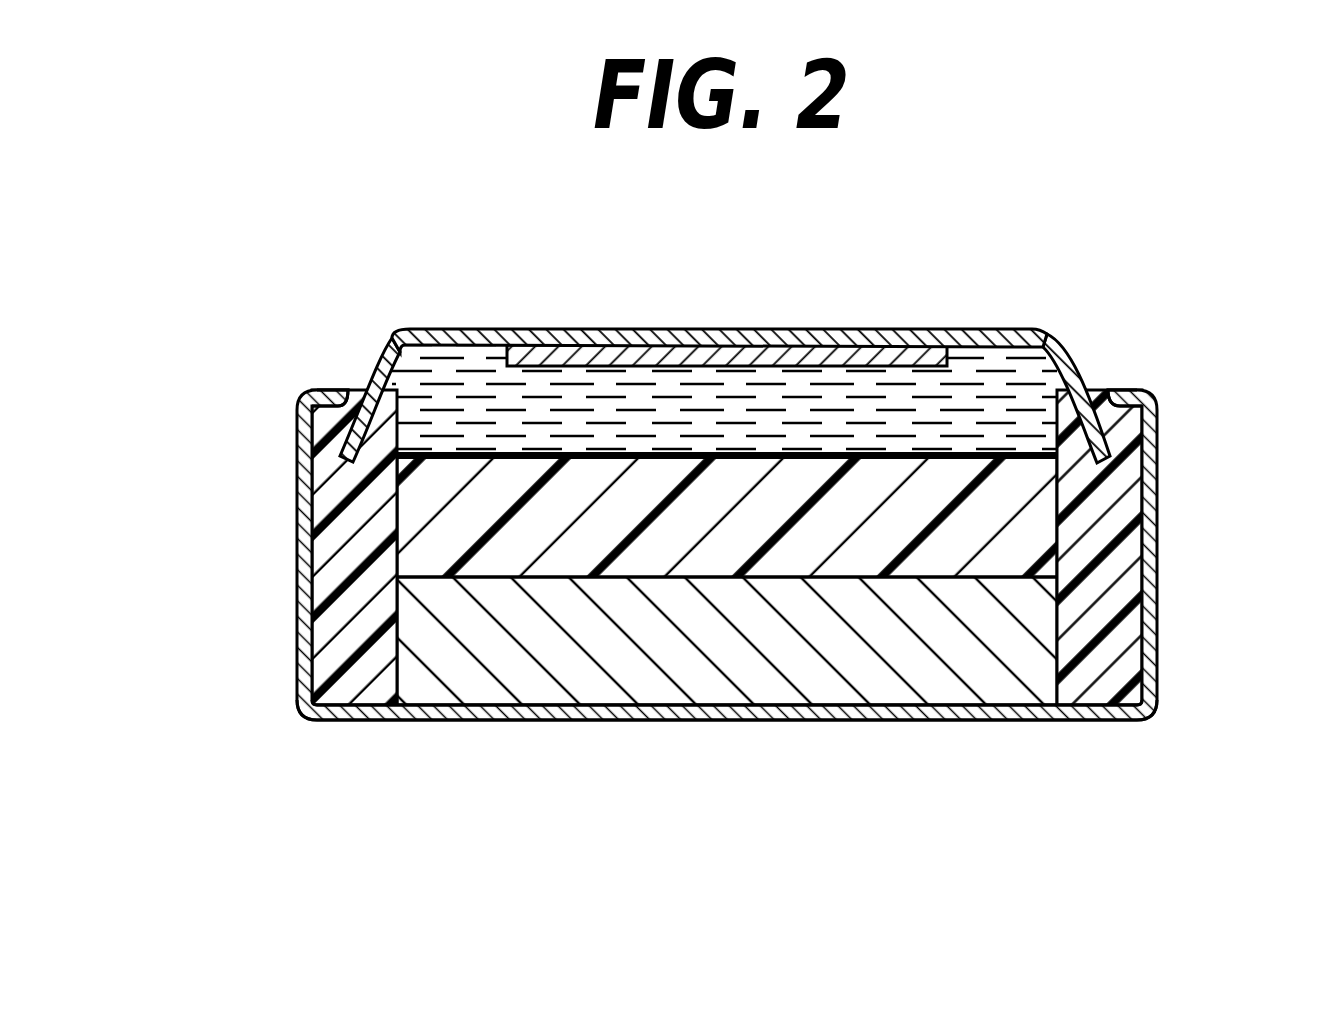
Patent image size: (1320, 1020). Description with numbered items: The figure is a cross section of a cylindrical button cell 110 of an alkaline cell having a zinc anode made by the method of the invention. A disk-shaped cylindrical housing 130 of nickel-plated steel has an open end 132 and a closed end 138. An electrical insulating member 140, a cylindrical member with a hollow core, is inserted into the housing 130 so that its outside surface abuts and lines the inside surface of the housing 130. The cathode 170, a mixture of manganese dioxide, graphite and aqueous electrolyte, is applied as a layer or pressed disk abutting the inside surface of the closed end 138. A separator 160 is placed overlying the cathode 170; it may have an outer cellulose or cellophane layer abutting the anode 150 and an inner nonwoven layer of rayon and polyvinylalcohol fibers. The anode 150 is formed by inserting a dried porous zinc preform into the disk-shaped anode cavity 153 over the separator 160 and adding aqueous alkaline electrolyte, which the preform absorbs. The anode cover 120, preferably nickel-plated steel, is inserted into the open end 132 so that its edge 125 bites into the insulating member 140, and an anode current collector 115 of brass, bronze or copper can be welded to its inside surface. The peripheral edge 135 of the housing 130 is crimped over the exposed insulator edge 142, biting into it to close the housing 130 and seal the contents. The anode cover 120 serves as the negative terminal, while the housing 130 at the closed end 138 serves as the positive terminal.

The button cell 110 is at (220, 284).
The anode current collector 115 is at (755, 350).
The anode cover 120 is at (930, 337).
The edge 125 is at (366, 364).
The housing 130 is at (805, 603).
The open end 132 is at (1092, 402).
The peripheral edge 135 is at (1120, 393).
The closed end 138 is at (893, 720).
The insulating member 140 is at (345, 556).
The insulator edge 142 is at (322, 406).
The anode 150 is at (500, 407).
The anode cavity 153 is at (420, 372).
The separator 160 is at (515, 560).
The cathode 170 is at (726, 650).